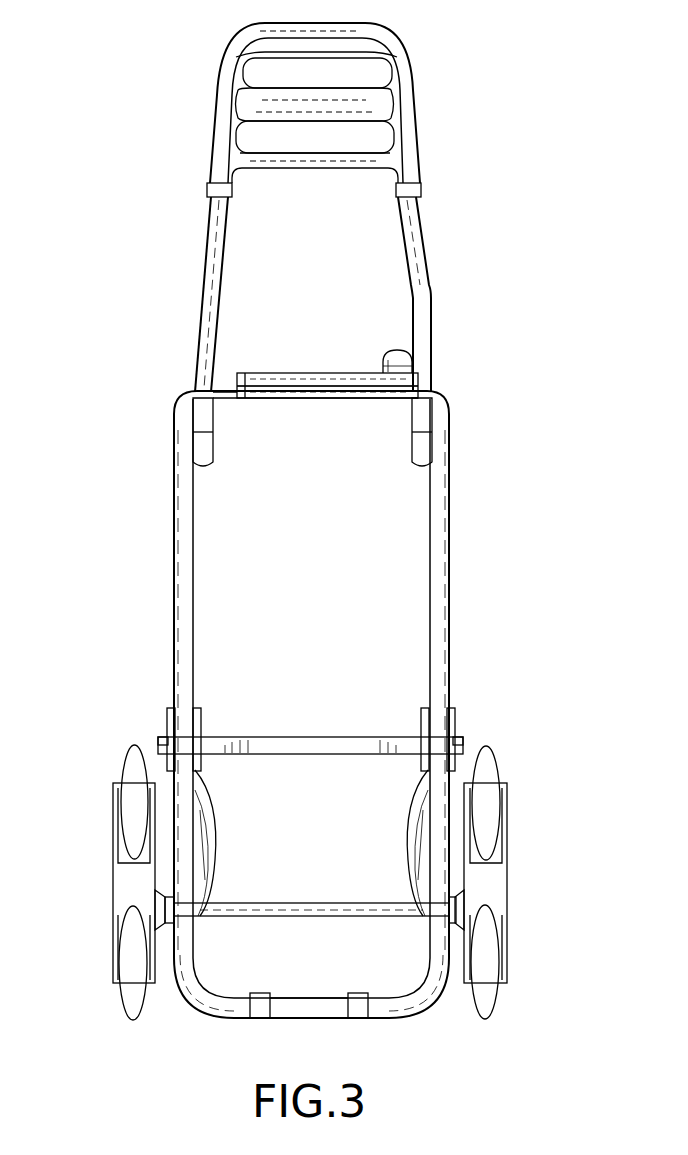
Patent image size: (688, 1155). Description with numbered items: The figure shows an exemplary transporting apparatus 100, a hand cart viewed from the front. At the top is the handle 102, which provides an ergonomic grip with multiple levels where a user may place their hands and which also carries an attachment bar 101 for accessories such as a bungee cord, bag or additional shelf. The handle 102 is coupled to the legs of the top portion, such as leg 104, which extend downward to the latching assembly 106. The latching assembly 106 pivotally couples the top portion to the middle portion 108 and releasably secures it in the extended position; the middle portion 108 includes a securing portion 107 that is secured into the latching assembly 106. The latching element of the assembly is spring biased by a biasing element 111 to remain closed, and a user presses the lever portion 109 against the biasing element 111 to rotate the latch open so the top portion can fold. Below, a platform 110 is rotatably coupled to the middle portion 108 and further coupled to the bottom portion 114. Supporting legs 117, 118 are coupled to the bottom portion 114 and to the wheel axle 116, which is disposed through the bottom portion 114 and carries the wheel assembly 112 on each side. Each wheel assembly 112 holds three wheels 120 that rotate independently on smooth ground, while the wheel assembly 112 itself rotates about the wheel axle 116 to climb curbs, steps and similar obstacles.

The transporting apparatus 100 is at (177, 44).
The attachment bar 101 is at (233, 158).
The handle 102 is at (216, 90).
The leg 104 is at (424, 230).
The latching assembly 106 is at (313, 373).
The securing portion 107 is at (325, 400).
The middle portion 108 is at (450, 490).
The lever portion 109 is at (396, 350).
The platform 110 is at (330, 737).
The biasing element 111 is at (258, 400).
The wheel assembly 112 is at (514, 745).
The bottom portion 114 is at (410, 1000).
The wheel axle 116 is at (272, 903).
The supporting leg 117 is at (412, 845).
The supporting leg 118 is at (215, 845).
The wheel 120 is at (133, 767).